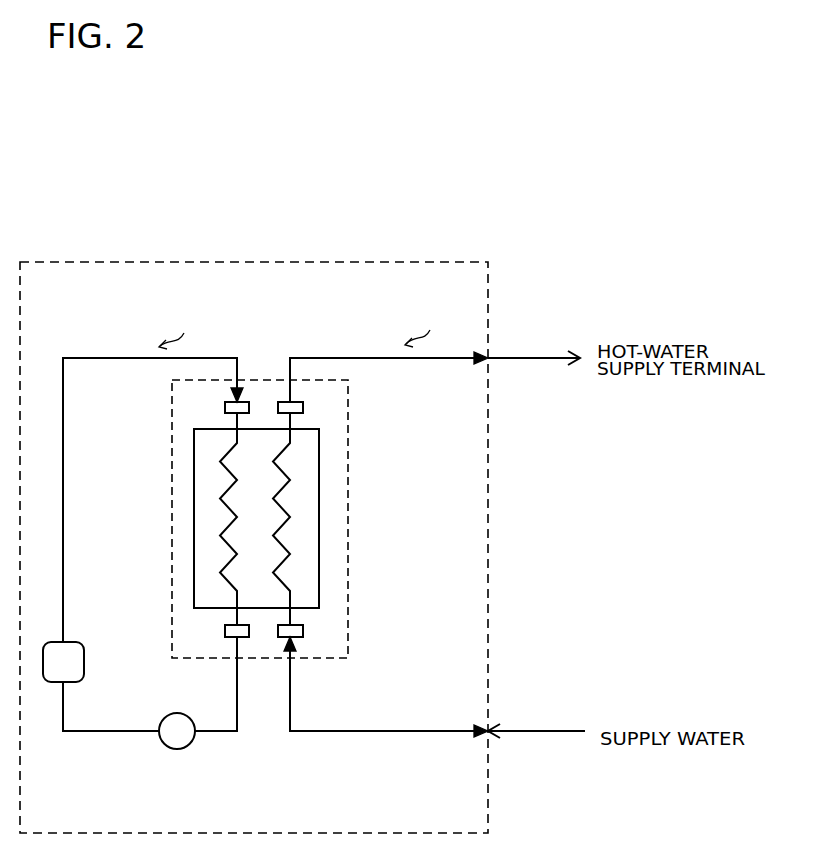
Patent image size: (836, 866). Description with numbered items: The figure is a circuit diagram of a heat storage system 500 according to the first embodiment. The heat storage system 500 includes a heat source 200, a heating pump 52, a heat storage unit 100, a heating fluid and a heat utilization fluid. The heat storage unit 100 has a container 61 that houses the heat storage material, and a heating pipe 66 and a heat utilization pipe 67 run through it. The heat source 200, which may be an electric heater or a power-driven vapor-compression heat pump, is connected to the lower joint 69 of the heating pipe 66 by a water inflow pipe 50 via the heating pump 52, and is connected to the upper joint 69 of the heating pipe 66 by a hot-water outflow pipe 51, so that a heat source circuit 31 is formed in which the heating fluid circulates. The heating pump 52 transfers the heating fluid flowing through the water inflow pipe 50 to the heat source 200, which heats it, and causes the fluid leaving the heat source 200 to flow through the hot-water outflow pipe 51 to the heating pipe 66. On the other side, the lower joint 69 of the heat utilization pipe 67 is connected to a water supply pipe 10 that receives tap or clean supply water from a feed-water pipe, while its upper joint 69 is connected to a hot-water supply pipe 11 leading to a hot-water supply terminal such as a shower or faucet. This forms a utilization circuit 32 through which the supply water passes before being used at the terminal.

The heat storage system 500 is at (386, 262).
The heat storage unit 100 is at (172, 445).
The container 61 is at (320, 455).
The heating pipe 66 is at (220, 500).
The heat utilization pipe 67 is at (290, 515).
The joint 69 is at (225, 410).
The hot-water outflow pipe 51 is at (105, 358).
The heat source circuit 31 is at (179, 327).
The hot-water supply pipe 11 is at (346, 358).
The utilization circuit 32 is at (492, 335).
The heat source 200 is at (98, 652).
The water inflow pipe 50 is at (115, 740).
The heating pump 52 is at (177, 752).
The water supply pipe 10 is at (369, 736).